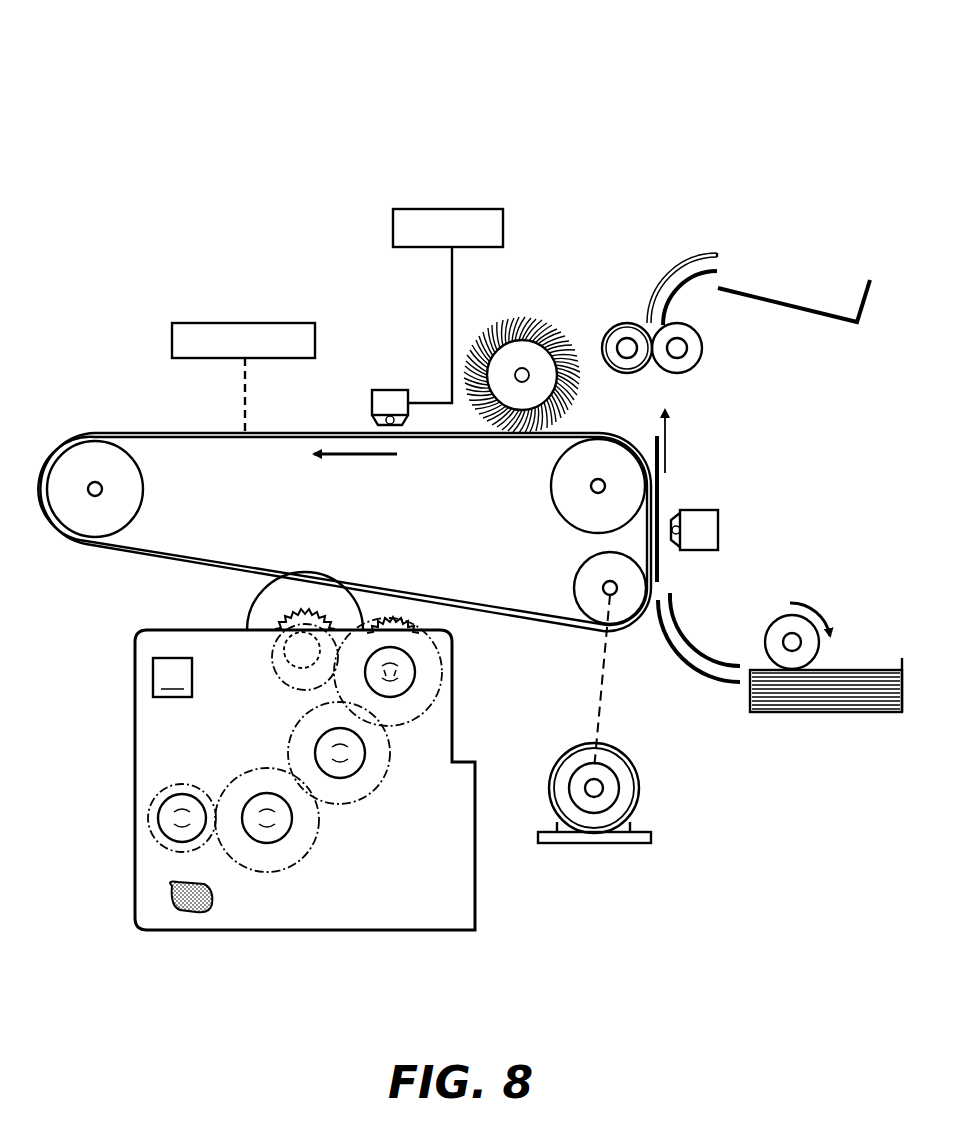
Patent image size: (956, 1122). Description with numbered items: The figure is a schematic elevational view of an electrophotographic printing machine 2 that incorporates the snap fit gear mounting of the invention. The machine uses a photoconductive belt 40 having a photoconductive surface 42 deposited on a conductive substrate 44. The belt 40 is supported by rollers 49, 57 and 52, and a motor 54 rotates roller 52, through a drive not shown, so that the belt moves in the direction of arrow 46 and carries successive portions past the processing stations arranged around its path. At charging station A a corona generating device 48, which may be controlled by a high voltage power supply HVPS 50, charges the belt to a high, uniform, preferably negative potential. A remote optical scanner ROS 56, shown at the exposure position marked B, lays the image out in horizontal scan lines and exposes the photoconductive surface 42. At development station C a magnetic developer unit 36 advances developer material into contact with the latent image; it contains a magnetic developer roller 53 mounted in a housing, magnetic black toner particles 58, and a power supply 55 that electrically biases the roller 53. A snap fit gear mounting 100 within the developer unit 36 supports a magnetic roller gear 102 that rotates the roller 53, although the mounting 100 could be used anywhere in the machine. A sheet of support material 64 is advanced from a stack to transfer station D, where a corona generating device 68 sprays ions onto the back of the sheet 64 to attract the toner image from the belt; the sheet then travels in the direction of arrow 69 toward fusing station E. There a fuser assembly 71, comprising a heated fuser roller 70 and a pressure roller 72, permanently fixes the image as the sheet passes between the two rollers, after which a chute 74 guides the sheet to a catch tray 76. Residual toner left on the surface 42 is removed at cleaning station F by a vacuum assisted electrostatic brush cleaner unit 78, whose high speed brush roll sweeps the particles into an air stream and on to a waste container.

The printing machine 2 is at (595, 62).
The charging station A is at (520, 204).
The exposure station B is at (174, 310).
The development station C is at (280, 948).
The transfer station D is at (722, 494).
The fusing station E is at (632, 302).
The cleaning station F is at (572, 318).
The HVPS (High Voltage Power Supply) 50 is at (420, 208).
The ROS (Remote Optical Scanner) 56 is at (315, 338).
The corona generating device 48 is at (376, 384).
The brush cleaner unit 78 is at (507, 322).
The heated fuser roller 70 is at (632, 371).
The pressure roller 72 is at (695, 336).
The chute 74 is at (703, 255).
The catch tray 76 is at (770, 298).
The fuser assembly 71 is at (684, 380).
The arrow 69 is at (668, 450).
The corona generating device 68 is at (708, 550).
The sheet of support material 64 is at (817, 702).
The photoconductive belt 40 is at (492, 447).
The arrow 46 is at (345, 456).
The roller 57 is at (127, 507).
The roller 49 is at (570, 515).
The roller 52 is at (580, 575).
The conductive substrate 44 is at (242, 560).
The photoconductive surface 42 is at (548, 622).
The motor 54 is at (654, 788).
The developer unit 36 is at (333, 927).
The toner particles 58 is at (186, 915).
The power supply 55 is at (302, 647).
The magnetic developer roller 53 is at (322, 595).
The magnetic roller gear 102 is at (390, 620).
The snap fit gear mounting 100 is at (267, 798).